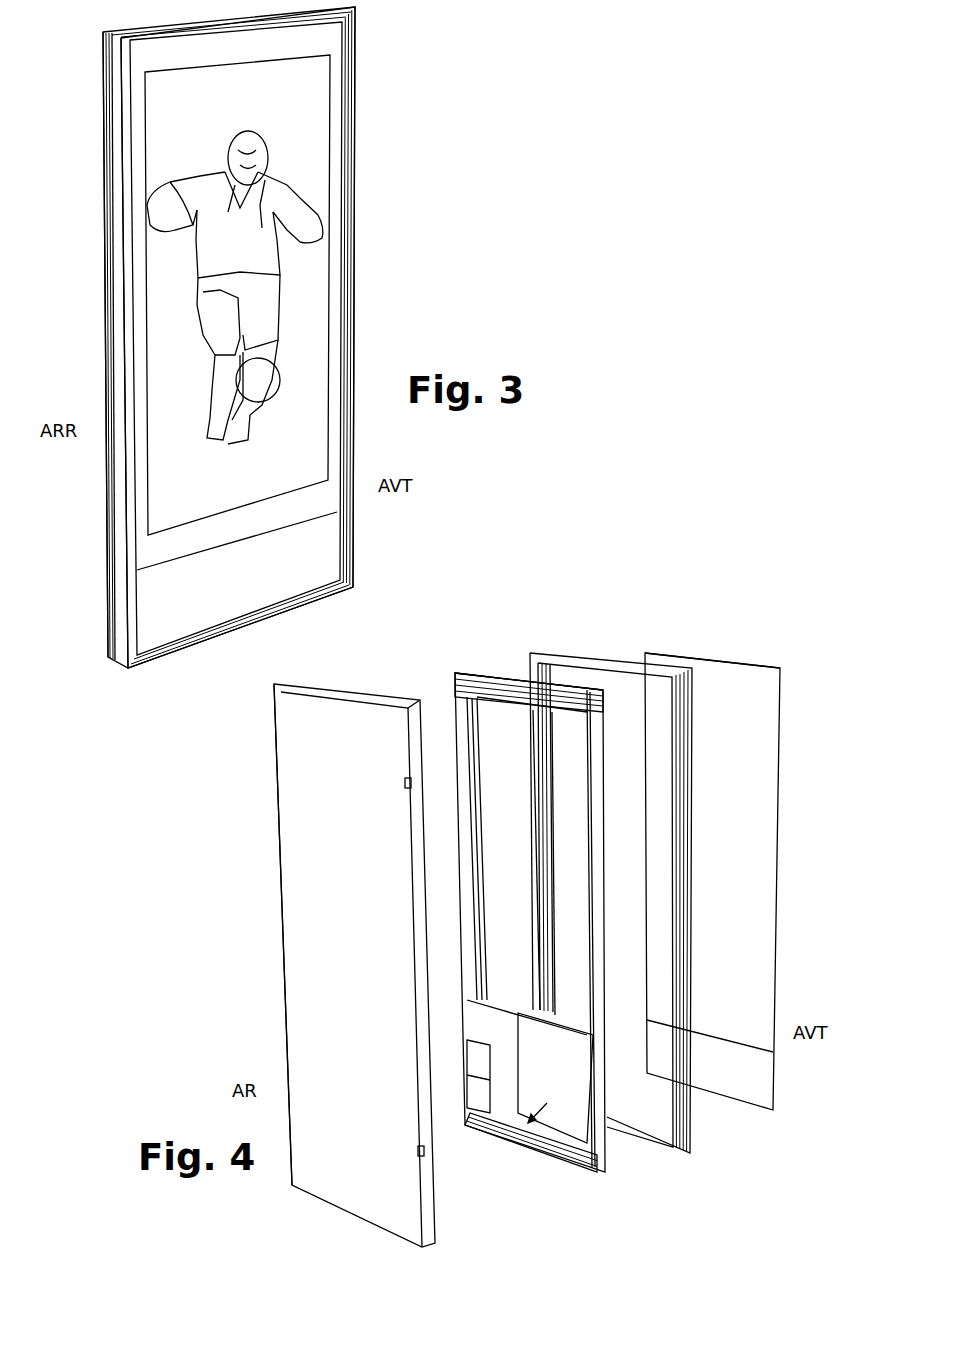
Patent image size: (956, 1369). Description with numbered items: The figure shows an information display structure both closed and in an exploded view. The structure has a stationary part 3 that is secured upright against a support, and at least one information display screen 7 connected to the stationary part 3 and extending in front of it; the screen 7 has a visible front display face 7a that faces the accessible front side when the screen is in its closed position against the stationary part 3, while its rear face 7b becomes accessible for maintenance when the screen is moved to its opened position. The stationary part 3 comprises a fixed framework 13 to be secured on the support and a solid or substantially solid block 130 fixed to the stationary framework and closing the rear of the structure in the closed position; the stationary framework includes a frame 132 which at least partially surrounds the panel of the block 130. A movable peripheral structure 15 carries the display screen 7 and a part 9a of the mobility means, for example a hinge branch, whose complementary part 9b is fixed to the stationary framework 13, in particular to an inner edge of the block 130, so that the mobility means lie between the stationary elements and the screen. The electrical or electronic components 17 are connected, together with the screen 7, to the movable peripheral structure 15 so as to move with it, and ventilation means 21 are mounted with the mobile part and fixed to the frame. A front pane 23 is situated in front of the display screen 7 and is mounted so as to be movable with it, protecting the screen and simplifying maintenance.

In FIG. 3, the stationary part 3 is at (103, 548).
In FIG. 3, the information display screen 7 is at (180, 620).
In FIG. 4, the information display screen 7 is at (780, 920).
In FIG. 3, the front display face 7a is at (173, 367).
In FIG. 4, the rear face of the screen 7b is at (730, 825).
In FIG. 4, the part of the mobility means 9a is at (676, 750).
In FIG. 4, the complementary part of the mobility means 9b is at (408, 785).
In FIG. 4, the fixed framework 13 is at (243, 878).
In FIG. 4, the movable peripheral structure 15 is at (690, 1145).
In FIG. 4, the electrical or electronic components 17 is at (500, 1140).
In FIG. 4, the ventilation means 21 is at (495, 683).
In FIG. 3, the front pane 23 is at (330, 530).
In FIG. 3, the solid block 130 is at (103, 267).
In FIG. 4, the solid block 130 is at (282, 968).
In FIG. 4, the frame 132 is at (455, 708).